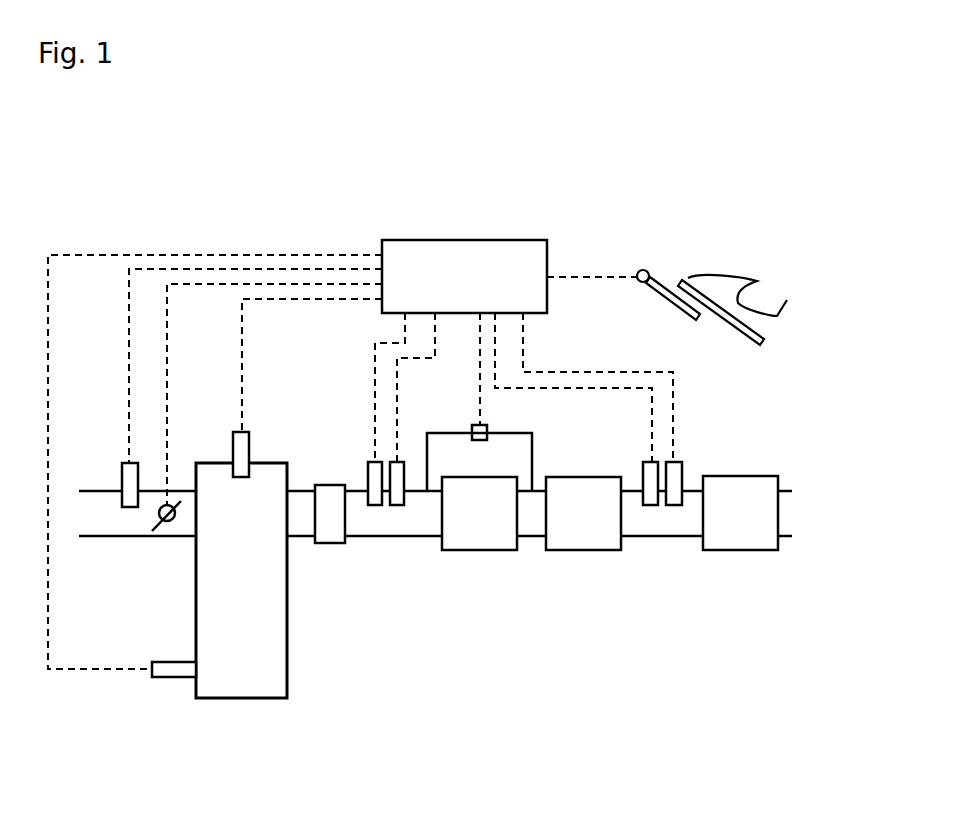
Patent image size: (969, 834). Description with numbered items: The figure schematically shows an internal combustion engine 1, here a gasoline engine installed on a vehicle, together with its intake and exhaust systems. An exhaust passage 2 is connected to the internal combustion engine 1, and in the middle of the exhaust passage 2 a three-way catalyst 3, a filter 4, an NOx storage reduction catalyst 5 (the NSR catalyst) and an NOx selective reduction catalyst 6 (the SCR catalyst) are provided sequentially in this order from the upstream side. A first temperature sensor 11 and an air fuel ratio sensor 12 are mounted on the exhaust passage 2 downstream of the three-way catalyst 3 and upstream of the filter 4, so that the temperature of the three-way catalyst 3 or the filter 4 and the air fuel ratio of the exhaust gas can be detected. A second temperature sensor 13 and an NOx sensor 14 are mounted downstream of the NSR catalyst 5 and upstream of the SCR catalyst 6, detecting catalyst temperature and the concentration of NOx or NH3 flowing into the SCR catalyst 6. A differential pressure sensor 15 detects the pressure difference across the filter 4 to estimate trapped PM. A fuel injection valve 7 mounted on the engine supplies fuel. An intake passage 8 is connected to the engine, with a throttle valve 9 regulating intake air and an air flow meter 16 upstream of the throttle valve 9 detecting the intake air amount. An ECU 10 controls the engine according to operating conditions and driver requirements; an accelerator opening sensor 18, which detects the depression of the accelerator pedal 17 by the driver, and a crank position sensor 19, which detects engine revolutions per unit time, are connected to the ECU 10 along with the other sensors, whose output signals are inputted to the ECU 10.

The internal combustion engine 1 is at (287, 670).
The exhaust passage 2 is at (385, 538).
The three-way catalyst 3 is at (328, 545).
The filter 4 is at (477, 550).
The NOx storage reduction catalyst 5 is at (582, 550).
The NOx selective reduction catalyst 6 is at (740, 550).
The fuel injection valve 7 is at (249, 440).
The intake passage 8 is at (128, 537).
The throttle valve 9 is at (167, 521).
The ECU 10 is at (382, 313).
The first temperature sensor 11 is at (368, 466).
The air fuel ratio sensor 12 is at (405, 462).
The second temperature sensor 13 is at (643, 466).
The NOx sensor 14 is at (682, 467).
The differential pressure sensor 15 is at (488, 414).
The air flow meter 16 is at (122, 466).
The accelerator pedal 17 is at (718, 322).
The accelerator opening sensor 18 is at (633, 287).
The crank position sensor 19 is at (176, 661).